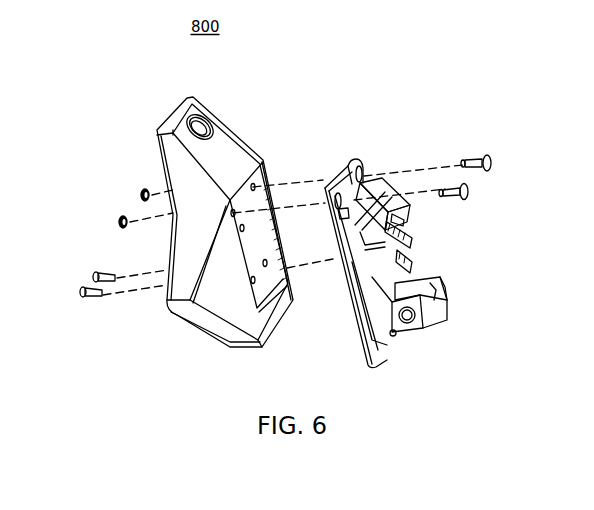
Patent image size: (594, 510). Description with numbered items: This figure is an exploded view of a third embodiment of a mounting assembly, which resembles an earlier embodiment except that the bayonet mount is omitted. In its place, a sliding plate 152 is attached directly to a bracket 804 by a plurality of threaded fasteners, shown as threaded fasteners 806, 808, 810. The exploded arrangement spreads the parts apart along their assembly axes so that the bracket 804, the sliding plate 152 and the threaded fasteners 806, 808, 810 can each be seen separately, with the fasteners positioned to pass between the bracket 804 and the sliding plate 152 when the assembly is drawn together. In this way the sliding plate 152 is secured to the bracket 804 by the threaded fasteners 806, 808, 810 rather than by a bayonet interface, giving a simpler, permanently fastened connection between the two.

The bracket 804 is at (233, 153).
The sliding plate 152 is at (352, 162).
The threaded fastener 806 is at (472, 186).
The threaded fastener 808 is at (138, 195).
The threaded fastener 810 is at (92, 277).